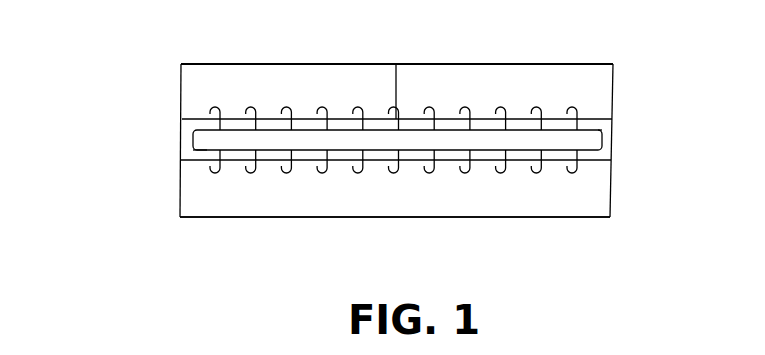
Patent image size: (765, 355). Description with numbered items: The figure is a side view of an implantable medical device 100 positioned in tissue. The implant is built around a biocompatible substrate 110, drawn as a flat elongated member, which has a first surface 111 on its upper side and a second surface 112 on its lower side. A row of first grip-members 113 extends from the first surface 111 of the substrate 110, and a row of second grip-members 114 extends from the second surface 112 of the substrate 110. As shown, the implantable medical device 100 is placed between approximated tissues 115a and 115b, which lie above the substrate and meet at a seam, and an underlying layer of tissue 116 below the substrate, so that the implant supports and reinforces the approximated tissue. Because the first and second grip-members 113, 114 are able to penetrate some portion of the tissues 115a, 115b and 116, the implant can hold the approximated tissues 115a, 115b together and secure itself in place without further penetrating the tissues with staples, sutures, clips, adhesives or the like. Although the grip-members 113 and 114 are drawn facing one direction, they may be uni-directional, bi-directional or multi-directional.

The implantable medical device 100 is at (127, 137).
The biocompatible substrate 110 is at (600, 142).
The first surface 111 is at (593, 130).
The second surface 112 is at (207, 153).
The first grip-member 113 is at (577, 108).
The second grip-member 114 is at (578, 163).
The approximated tissue 115a is at (277, 64).
The approximated tissue 115b is at (470, 64).
The underlying layer of tissue 116 is at (508, 217).